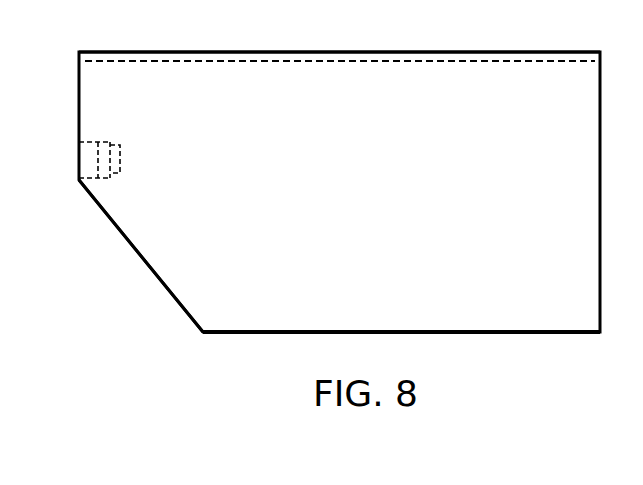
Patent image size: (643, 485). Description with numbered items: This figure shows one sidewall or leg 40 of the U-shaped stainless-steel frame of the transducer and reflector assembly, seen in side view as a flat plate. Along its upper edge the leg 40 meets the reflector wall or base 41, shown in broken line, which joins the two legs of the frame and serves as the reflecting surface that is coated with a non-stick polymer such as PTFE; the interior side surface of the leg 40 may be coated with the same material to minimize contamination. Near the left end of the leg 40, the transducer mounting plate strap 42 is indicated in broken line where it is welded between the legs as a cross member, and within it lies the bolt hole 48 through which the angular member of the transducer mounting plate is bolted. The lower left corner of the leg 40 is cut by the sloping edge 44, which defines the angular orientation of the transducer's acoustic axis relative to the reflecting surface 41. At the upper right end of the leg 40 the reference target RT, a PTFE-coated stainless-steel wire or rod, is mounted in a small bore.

The sidewall or leg 40 is at (312, 75).
The reflector wall or base 41 is at (408, 52).
The reference target RT is at (592, 62).
The transducer mounting plate strap 42 is at (90, 143).
The bolt hole 48 is at (120, 163).
The sloping edge 44 is at (175, 292).